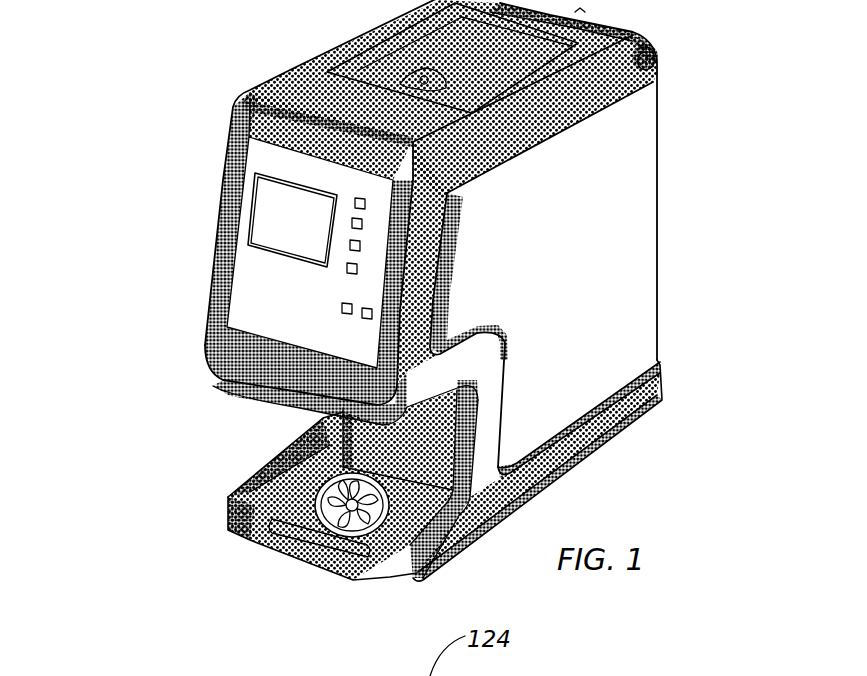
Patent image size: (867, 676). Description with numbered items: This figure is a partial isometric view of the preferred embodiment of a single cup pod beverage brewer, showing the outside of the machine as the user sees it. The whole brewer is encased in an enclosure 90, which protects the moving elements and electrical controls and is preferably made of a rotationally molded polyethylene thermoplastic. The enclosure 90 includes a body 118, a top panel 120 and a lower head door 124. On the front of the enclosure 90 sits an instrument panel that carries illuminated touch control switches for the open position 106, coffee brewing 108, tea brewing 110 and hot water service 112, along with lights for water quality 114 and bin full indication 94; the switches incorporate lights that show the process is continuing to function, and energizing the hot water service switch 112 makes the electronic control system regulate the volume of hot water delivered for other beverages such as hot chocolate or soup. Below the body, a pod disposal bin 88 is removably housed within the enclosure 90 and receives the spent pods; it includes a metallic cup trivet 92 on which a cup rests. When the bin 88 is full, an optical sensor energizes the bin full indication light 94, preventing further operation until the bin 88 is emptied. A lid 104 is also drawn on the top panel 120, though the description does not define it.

The pod disposal bin 88 is at (352, 540).
The enclosure 90 is at (669, 248).
The metallic cup trivet 92 is at (270, 560).
The bin full indication light 94 is at (363, 319).
The lid 104 is at (275, 163).
The open position touch control switch 106 is at (354, 203).
The coffee brewing touch control switch 108 is at (352, 226).
The tea brewing touch control switch 110 is at (350, 247).
The hot water service switch 112 is at (347, 270).
The water quality light 114 is at (343, 311).
The body 118 is at (622, 430).
The top panel 120 is at (657, 68).
The lower head door 124 is at (250, 217).